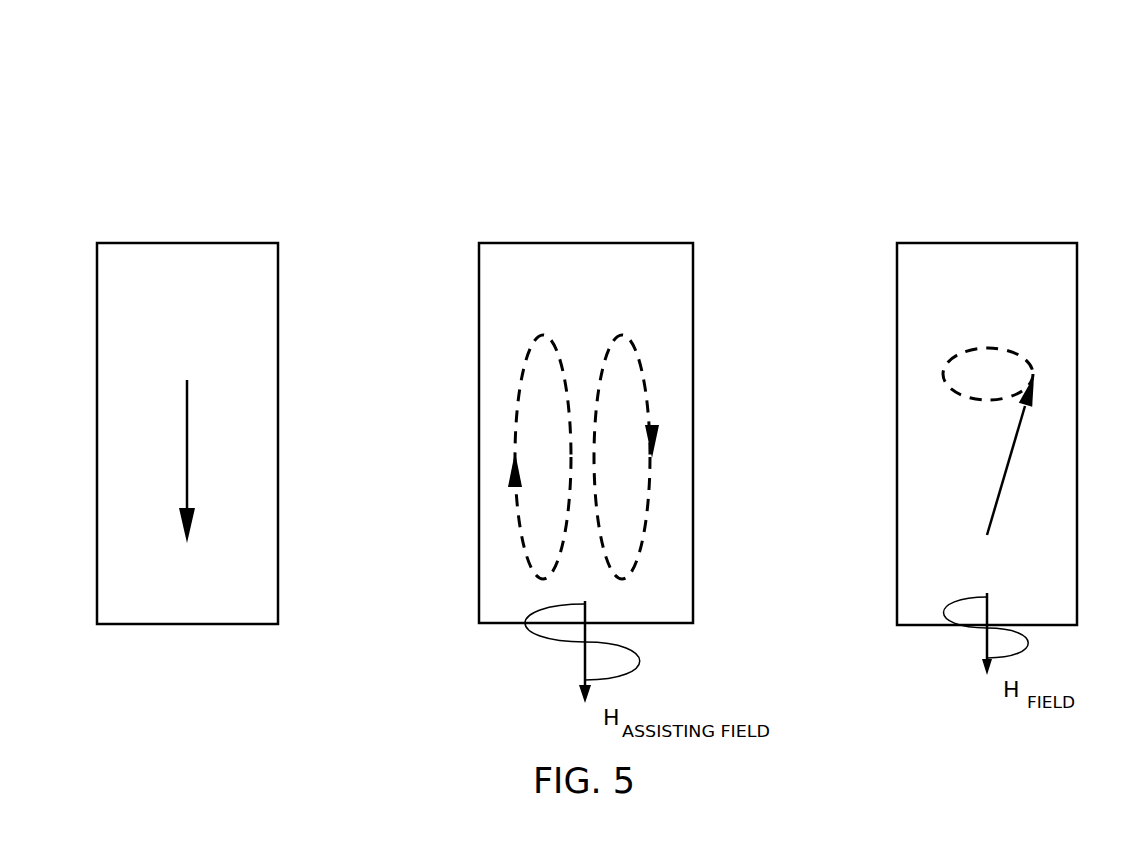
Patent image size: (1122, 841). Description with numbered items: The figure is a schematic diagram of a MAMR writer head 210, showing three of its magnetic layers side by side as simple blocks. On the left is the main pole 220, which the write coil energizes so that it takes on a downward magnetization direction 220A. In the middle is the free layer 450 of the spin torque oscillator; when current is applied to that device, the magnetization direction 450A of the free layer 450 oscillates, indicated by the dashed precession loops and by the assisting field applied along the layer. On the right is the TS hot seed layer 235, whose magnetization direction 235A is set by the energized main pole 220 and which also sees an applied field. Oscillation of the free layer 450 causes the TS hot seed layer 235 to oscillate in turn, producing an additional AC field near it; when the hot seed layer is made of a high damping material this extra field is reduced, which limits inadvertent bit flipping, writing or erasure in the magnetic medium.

The MAMR writer head 210 is at (228, 78).
The main pole 220 is at (143, 256).
The magnetization direction 220A is at (185, 448).
The free layer 450 is at (533, 257).
The magnetization direction 450A is at (517, 513).
The TS hot seed layer 235 is at (943, 257).
The magnetization direction 235A is at (1010, 449).